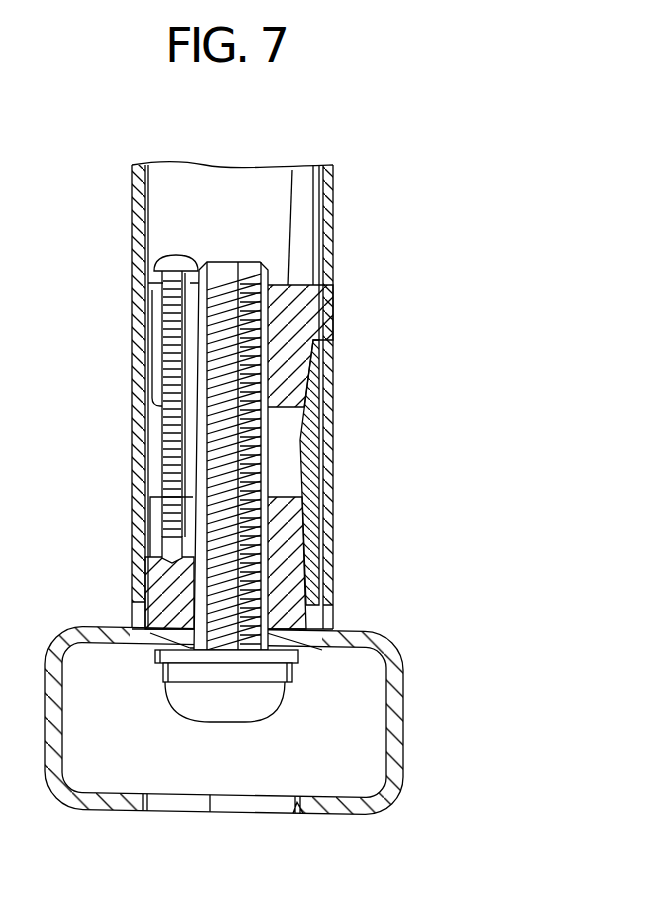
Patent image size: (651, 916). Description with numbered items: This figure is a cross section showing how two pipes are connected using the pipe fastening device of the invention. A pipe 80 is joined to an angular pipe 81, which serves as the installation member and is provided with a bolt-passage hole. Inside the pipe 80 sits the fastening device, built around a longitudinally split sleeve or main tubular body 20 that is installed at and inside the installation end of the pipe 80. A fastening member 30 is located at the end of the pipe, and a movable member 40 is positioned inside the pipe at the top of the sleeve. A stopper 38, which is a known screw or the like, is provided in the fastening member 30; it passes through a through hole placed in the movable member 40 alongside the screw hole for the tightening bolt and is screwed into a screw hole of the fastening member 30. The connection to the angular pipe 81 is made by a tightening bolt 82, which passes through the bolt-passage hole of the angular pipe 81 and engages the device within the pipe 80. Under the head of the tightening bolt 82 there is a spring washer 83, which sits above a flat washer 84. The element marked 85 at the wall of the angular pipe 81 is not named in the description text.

The main tubular body 20 is at (313, 382).
The fastening member 30 is at (292, 572).
The stopper 38 is at (188, 252).
The movable member 40 is at (303, 300).
The pipe 80 is at (332, 450).
The angular pipe 81 is at (403, 712).
The tightening bolt 82 is at (270, 698).
The spring washer 83 is at (190, 672).
The flat washer 84 is at (155, 655).
The slit 85 is at (297, 805).